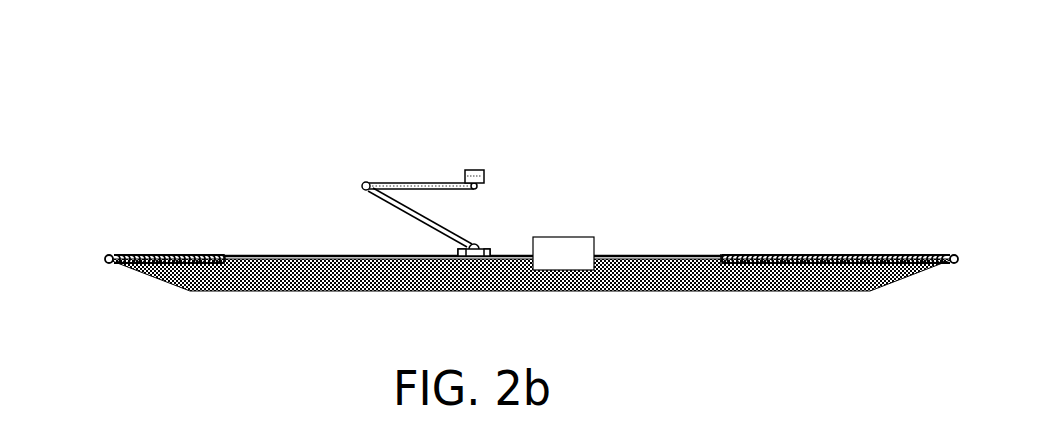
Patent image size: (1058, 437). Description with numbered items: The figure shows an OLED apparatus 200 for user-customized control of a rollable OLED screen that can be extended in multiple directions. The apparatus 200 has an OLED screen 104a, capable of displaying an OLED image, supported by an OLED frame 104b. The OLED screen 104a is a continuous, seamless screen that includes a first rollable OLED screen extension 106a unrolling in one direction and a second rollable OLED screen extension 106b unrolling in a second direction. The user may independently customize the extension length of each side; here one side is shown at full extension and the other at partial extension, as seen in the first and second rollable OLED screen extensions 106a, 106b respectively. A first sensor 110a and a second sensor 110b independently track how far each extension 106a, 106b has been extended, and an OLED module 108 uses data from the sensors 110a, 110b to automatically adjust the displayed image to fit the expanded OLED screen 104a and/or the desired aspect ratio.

The OLED apparatus 200 is at (139, 94).
The OLED screen 104a is at (762, 295).
The OLED frame 104b is at (631, 253).
The first rollable OLED screen extension 106a is at (857, 251).
The second rollable OLED screen extension 106b is at (158, 253).
The OLED module 108 is at (563, 253).
The first sensor 110a is at (721, 253).
The second sensor 110b is at (228, 253).